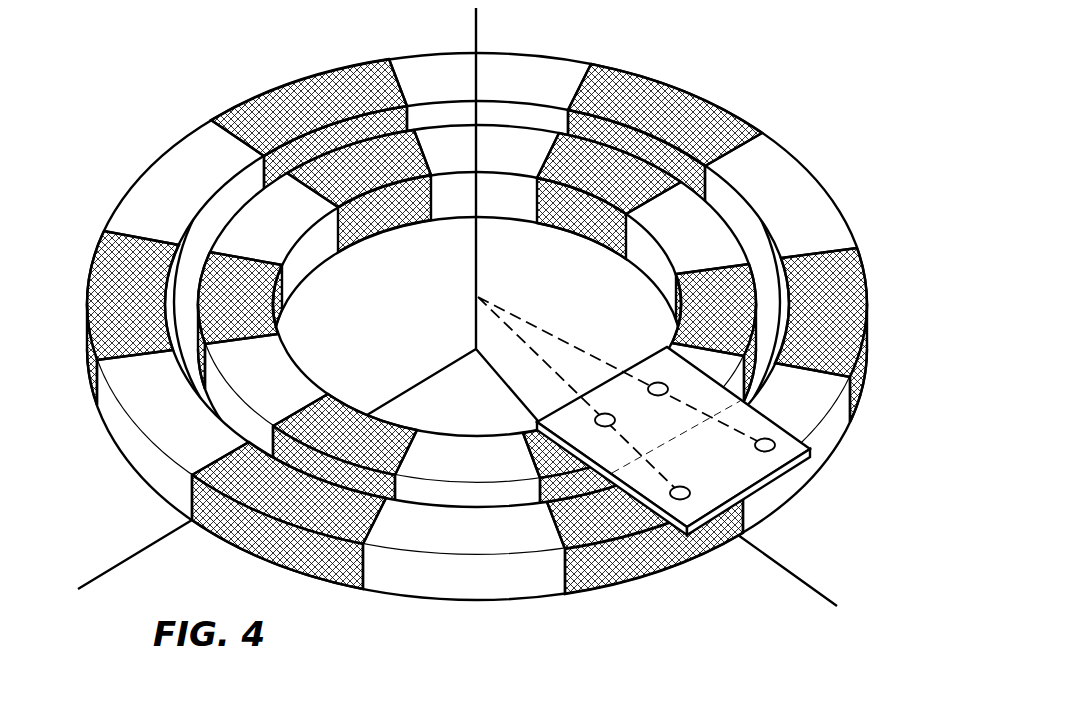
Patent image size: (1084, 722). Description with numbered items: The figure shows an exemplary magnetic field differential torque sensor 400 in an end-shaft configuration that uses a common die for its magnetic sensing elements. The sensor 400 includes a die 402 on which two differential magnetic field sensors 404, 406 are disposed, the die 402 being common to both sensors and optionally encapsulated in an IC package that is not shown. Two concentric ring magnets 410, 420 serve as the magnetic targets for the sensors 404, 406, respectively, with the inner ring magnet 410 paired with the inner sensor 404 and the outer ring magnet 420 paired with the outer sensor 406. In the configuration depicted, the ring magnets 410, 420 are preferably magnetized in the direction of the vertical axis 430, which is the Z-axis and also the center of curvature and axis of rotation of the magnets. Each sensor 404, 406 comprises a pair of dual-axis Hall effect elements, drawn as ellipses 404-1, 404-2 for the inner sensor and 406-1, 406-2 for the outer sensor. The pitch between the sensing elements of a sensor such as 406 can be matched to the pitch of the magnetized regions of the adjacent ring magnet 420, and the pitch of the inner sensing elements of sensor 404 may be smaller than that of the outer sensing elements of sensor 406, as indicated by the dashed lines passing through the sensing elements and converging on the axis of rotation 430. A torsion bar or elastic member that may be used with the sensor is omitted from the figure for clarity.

The magnetic field differential torque sensor 400 is at (475, 326).
The die 402 is at (477, 326).
The differential magnetic field sensor 404 is at (598, 374).
The dual-axis Hall effect element 404-1 is at (594, 417).
The dual-axis Hall effect element 404-2 is at (650, 386).
The differential magnetic field sensor 406 is at (647, 446).
The dual-axis Hall effect element 406-1 is at (553, 533).
The dual-axis Hall effect element 406-2 is at (795, 455).
The ring magnet 410 is at (267, 365).
The ring magnet 420 is at (782, 187).
The vertical axis 430 is at (473, 23).